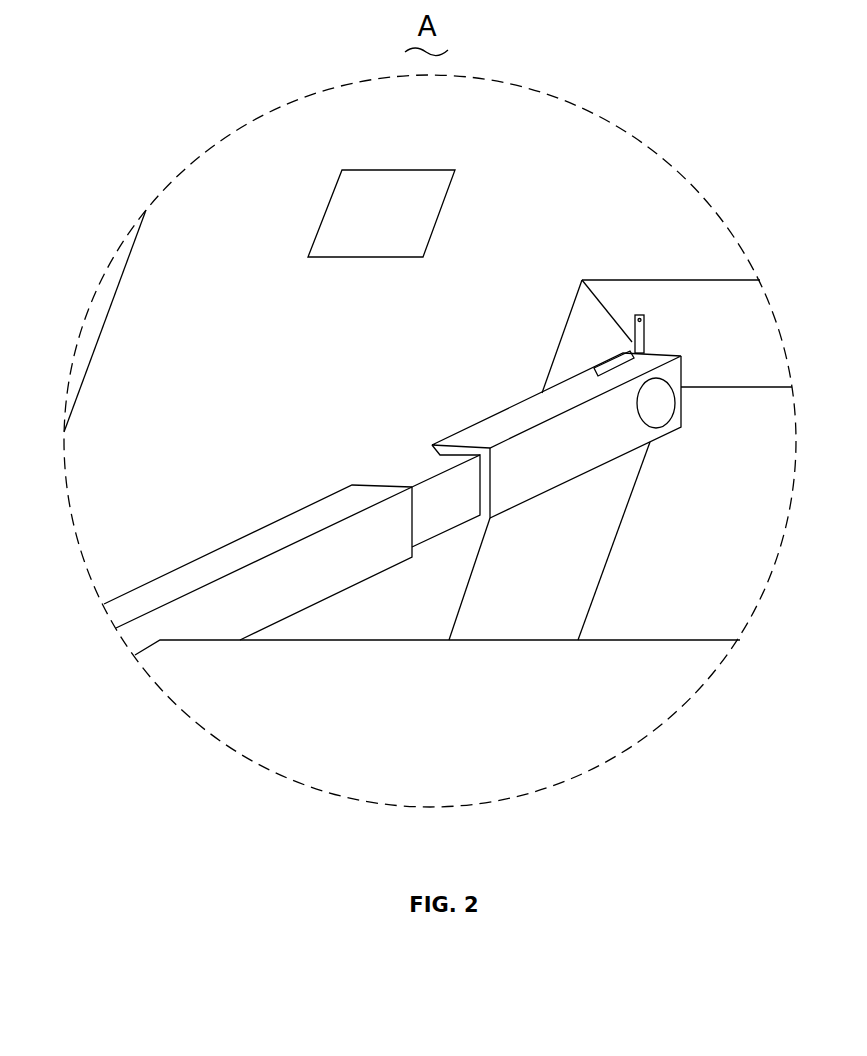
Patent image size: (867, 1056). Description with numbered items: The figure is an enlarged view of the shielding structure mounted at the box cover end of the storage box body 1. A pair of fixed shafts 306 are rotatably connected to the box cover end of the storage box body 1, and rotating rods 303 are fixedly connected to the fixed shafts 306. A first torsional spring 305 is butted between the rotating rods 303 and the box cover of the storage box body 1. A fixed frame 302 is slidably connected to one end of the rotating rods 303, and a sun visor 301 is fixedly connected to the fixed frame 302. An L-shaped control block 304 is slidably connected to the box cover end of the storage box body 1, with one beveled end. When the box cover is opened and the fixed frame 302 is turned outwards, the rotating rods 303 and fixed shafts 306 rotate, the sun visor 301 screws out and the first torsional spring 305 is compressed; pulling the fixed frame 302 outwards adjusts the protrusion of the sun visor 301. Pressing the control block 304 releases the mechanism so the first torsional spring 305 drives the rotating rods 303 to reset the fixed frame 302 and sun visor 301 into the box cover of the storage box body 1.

The storage box body 1 is at (173, 258).
The sun visor 301 is at (648, 682).
The fixed frame 302 is at (275, 537).
The rotating rods 303 is at (413, 470).
The control block 304 is at (362, 210).
The first torsional spring 305 is at (642, 320).
The fixed shafts 306 is at (660, 407).